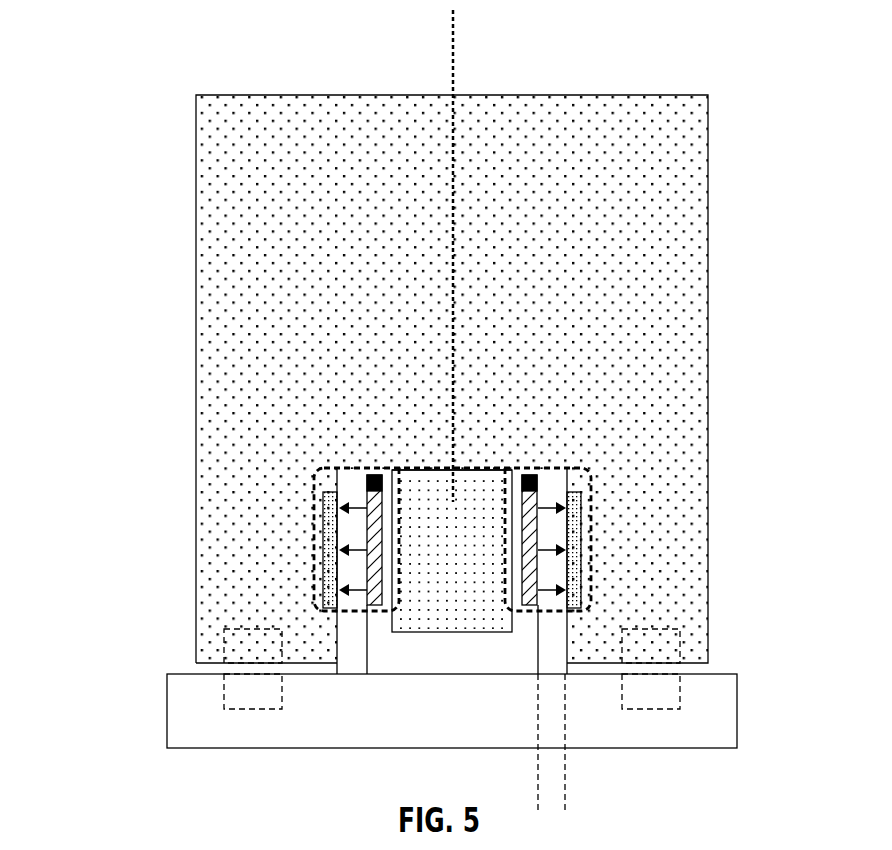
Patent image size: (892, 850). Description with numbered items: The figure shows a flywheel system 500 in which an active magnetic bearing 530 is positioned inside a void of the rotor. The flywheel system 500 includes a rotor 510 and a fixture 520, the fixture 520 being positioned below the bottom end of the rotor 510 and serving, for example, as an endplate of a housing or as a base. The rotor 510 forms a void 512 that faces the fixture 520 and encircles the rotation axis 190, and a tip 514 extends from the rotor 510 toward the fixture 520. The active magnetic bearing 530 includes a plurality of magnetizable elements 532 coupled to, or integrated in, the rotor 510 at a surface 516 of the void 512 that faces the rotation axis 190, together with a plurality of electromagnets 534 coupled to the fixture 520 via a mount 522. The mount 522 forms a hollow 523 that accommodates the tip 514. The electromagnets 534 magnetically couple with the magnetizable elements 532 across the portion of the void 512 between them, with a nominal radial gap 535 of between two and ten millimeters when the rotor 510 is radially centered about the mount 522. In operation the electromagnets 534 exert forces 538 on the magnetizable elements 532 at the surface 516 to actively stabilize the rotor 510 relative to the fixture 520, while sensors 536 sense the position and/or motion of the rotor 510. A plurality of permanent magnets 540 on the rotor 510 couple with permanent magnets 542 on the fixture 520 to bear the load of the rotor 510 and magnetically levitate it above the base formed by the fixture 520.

The flywheel system 500 is at (100, 60).
The rotation axis 190 is at (453, 256).
The rotor 510 is at (233, 126).
The void 512 is at (352, 663).
The tip 514 is at (468, 559).
The surface 516 is at (352, 636).
The fixture 520 is at (468, 722).
The mount 522 is at (528, 664).
The hollow 523 is at (387, 462).
The active magnetic bearing 530 is at (348, 467).
The magnetizable elements 532 is at (323, 550).
The electromagnets 534 is at (367, 562).
The nominal radial gap 535 is at (493, 797).
The sensors 536 is at (367, 486).
The forces 538 is at (540, 592).
The permanent magnets 540 is at (269, 656).
The permanent magnets 542 is at (269, 702).